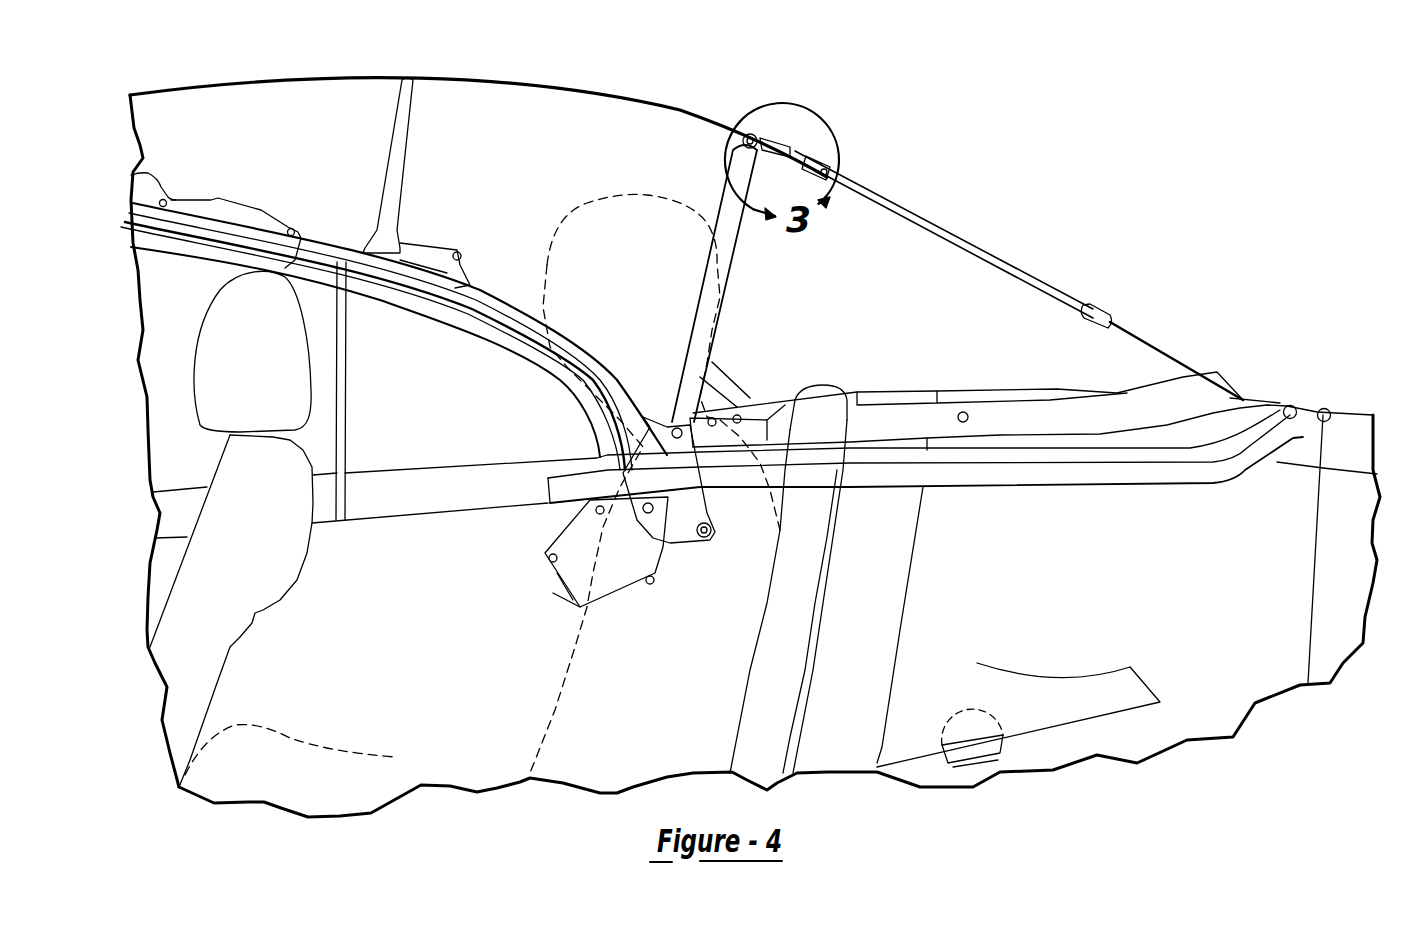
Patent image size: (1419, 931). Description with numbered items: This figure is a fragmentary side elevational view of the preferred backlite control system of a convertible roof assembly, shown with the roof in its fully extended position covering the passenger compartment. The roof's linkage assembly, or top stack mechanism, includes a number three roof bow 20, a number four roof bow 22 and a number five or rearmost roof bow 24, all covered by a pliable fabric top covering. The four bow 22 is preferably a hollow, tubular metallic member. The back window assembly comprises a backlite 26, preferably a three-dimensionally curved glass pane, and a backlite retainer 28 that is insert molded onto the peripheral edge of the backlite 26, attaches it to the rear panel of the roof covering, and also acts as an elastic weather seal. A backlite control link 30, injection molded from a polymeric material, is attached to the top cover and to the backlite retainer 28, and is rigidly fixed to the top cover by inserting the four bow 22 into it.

The number three roof bow 20 is at (410, 78).
The number four roof bow 22 is at (746, 138).
The number five or rearmost roof bow 24 is at (1223, 387).
The backlite 26 is at (950, 233).
The backlite retainer 28 is at (840, 147).
The backlite control link 30 is at (790, 147).